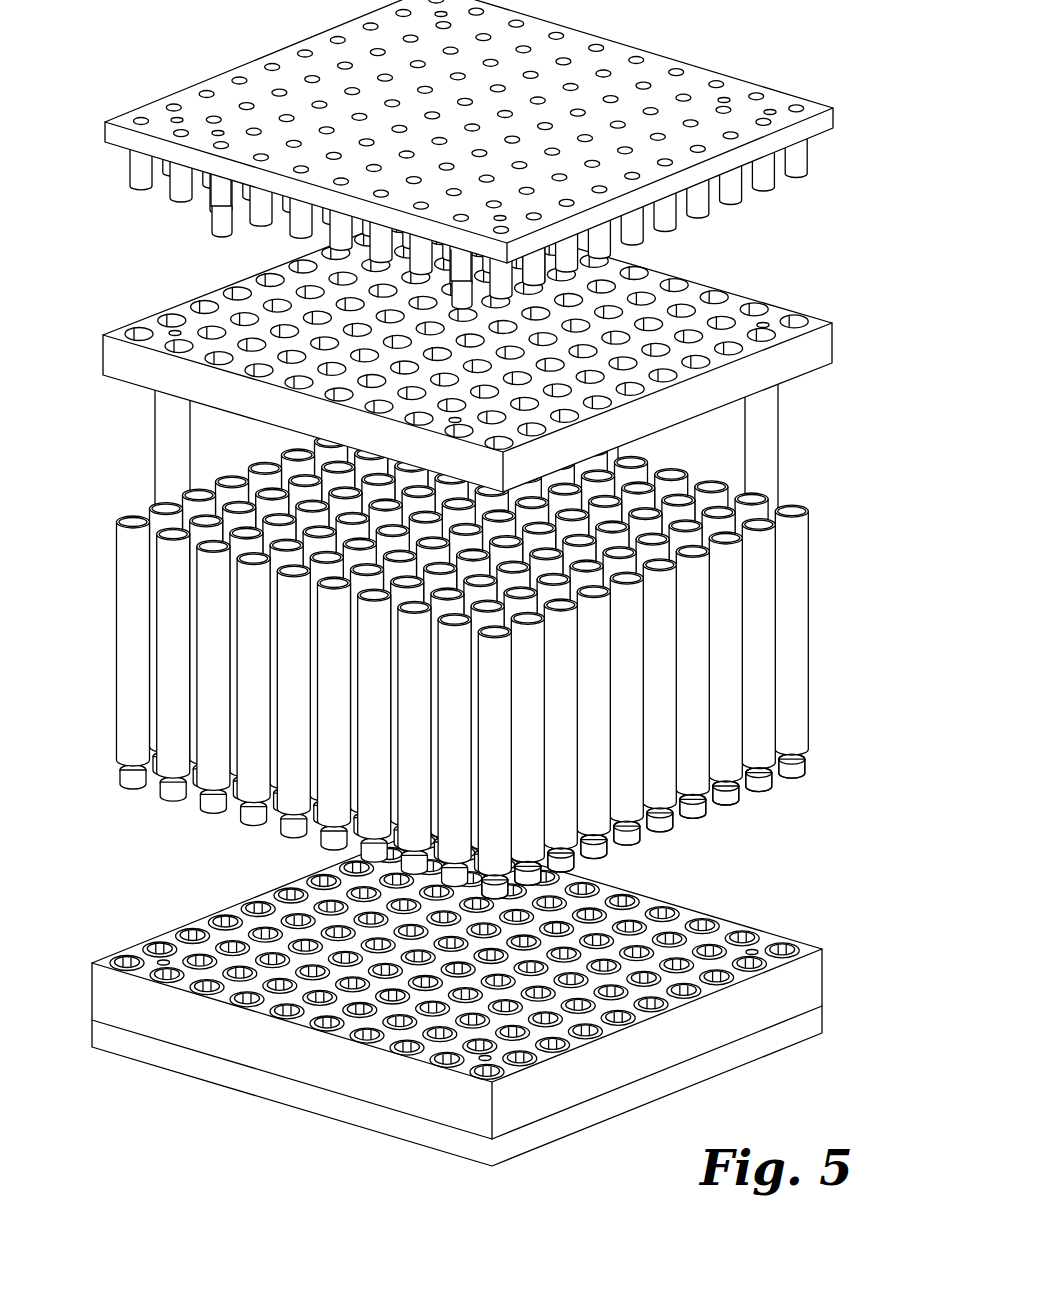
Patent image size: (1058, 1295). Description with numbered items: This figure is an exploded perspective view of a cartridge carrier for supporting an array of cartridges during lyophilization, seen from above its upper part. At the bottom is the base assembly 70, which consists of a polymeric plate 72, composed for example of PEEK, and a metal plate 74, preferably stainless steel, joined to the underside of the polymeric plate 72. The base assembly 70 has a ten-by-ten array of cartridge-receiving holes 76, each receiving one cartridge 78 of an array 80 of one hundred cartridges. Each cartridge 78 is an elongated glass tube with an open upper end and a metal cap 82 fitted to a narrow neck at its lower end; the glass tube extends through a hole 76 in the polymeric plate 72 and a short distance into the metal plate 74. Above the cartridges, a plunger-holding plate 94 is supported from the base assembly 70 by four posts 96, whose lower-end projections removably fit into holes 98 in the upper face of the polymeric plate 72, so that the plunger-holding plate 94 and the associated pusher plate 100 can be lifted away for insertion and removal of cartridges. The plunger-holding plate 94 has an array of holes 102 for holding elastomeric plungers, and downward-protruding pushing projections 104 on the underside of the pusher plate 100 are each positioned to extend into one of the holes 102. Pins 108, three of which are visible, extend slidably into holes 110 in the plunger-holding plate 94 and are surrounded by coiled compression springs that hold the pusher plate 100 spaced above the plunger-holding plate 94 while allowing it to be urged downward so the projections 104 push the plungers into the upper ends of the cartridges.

The base assembly 70 is at (476, 1002).
The polymeric plate 72 is at (810, 975).
The metal plate 74 is at (813, 1020).
The cartridge-receiving holes 76 is at (683, 913).
The cartridge 78 is at (773, 600).
The array of cartridges 80 is at (494, 646).
The metal cap 82 is at (800, 762).
The plunger-holding plate 94 is at (481, 349).
The posts 96 is at (172, 464).
The holes 98 is at (763, 947).
The pusher plate 100 is at (511, 154).
The holes 102 is at (683, 289).
The pushing projections 104 is at (815, 158).
The pins 108 is at (450, 300).
The holes 110 is at (205, 348).